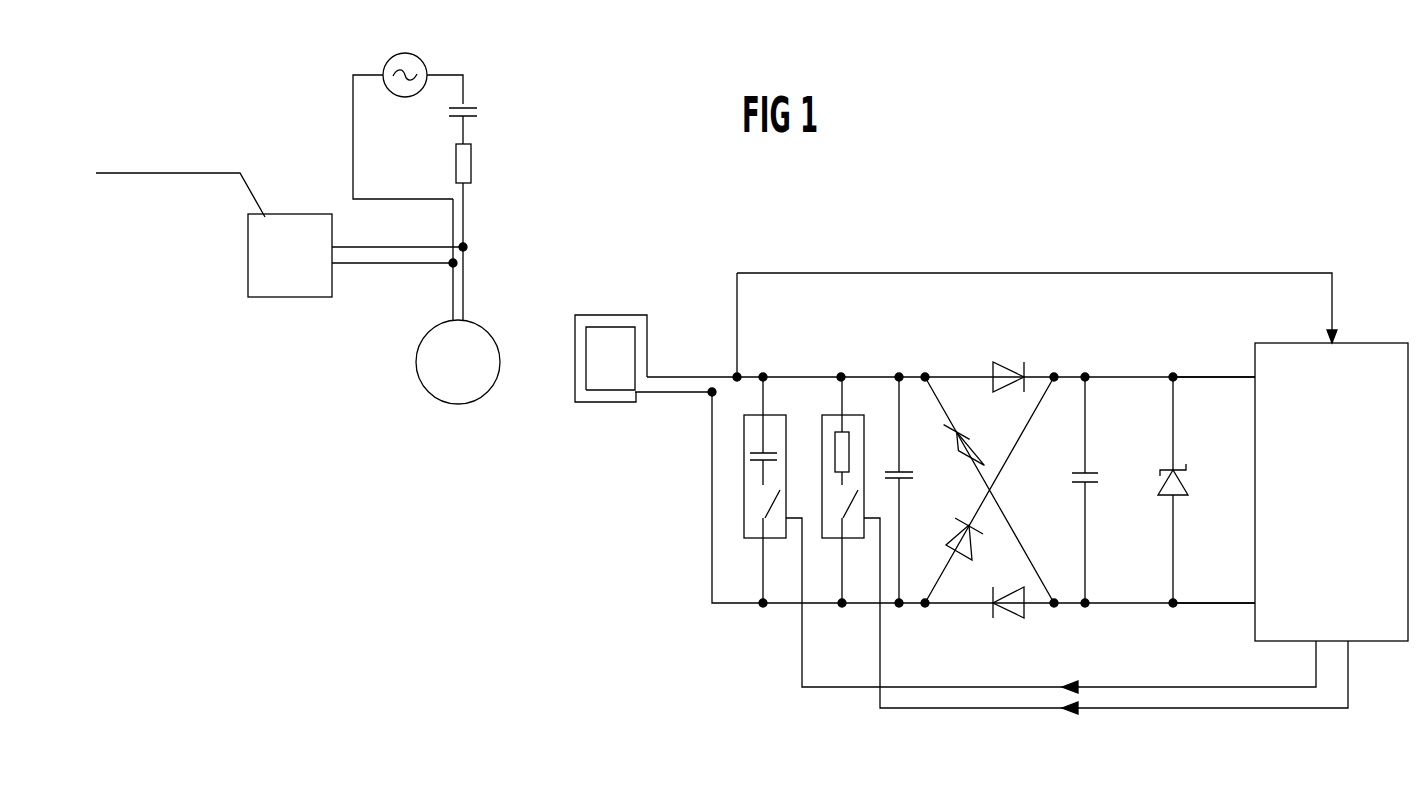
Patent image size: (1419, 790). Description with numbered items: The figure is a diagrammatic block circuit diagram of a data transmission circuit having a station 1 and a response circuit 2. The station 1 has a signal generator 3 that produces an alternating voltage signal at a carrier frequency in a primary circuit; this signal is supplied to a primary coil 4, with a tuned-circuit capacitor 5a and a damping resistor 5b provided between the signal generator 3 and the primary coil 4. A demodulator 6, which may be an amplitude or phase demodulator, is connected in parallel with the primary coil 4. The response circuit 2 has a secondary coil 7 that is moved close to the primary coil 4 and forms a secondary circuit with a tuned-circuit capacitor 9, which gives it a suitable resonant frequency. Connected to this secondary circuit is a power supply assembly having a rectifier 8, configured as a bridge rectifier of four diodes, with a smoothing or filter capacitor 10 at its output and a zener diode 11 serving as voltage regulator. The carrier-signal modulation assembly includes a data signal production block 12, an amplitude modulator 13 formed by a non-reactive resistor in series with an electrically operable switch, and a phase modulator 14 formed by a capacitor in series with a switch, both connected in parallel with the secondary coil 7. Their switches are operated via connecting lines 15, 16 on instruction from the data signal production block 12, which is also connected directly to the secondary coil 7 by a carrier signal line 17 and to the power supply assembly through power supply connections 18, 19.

The station 1 is at (357, 414).
The response circuit 2 is at (1038, 247).
The signal generator 3 is at (405, 97).
The primary coil 4 is at (458, 404).
The tuned-circuit capacitor 5a is at (478, 110).
The damping resistor 5b is at (471, 163).
The demodulator 6 is at (290, 297).
The secondary coil 7 is at (608, 315).
The rectifier 8 is at (962, 370).
The tuned-circuit capacitor 9 is at (913, 478).
The smoothing or filter capacitor 10 is at (1090, 485).
The zener diode 11 is at (1178, 498).
The data signal production block 12 is at (1384, 343).
The amplitude modulator 13 is at (855, 415).
The phase modulator 14 is at (775, 415).
The connecting line 15 is at (963, 708).
The connecting line 16 is at (843, 687).
The carrier signal line 17 is at (1133, 273).
The power supply connection 18 is at (1208, 377).
The power supply connection 19 is at (1212, 603).